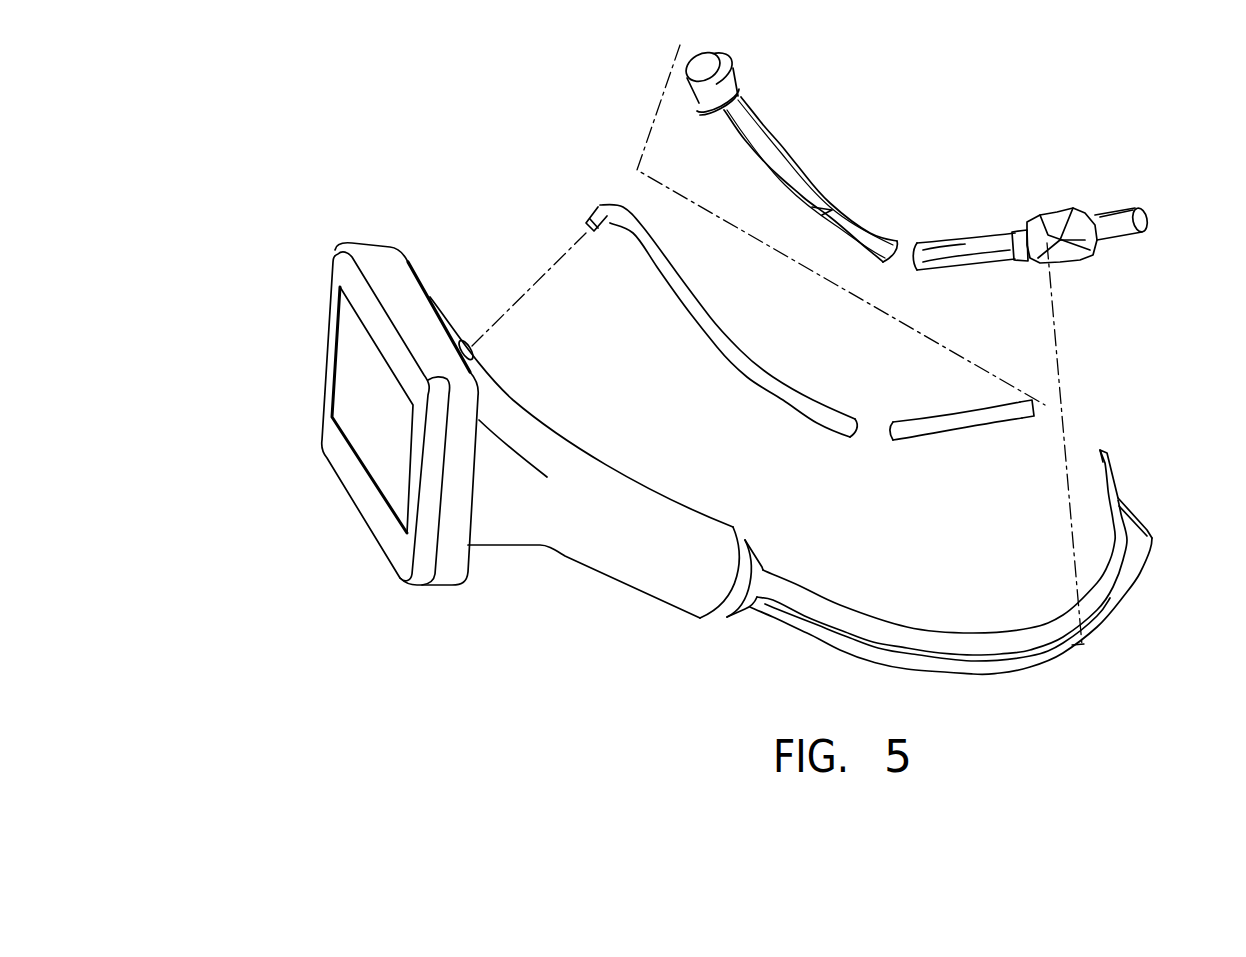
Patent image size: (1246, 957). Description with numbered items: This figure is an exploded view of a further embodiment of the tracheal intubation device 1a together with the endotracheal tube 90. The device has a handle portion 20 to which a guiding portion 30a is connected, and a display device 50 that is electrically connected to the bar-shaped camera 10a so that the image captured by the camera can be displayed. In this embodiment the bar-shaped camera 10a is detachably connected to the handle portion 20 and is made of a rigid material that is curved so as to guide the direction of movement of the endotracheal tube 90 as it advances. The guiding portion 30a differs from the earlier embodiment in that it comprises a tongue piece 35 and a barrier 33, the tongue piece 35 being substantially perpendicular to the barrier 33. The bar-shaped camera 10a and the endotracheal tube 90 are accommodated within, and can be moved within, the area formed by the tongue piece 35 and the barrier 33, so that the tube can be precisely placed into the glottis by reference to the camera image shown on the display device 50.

The tracheal intubation device 1a is at (267, 247).
The bar-shaped camera 10a is at (610, 217).
The handle portion 20 is at (643, 562).
The guiding portion 30a is at (1017, 603).
The barrier 33 is at (1127, 573).
The tongue piece 35 is at (973, 643).
The display device 50 is at (380, 427).
The endotracheal tube 90 is at (763, 143).